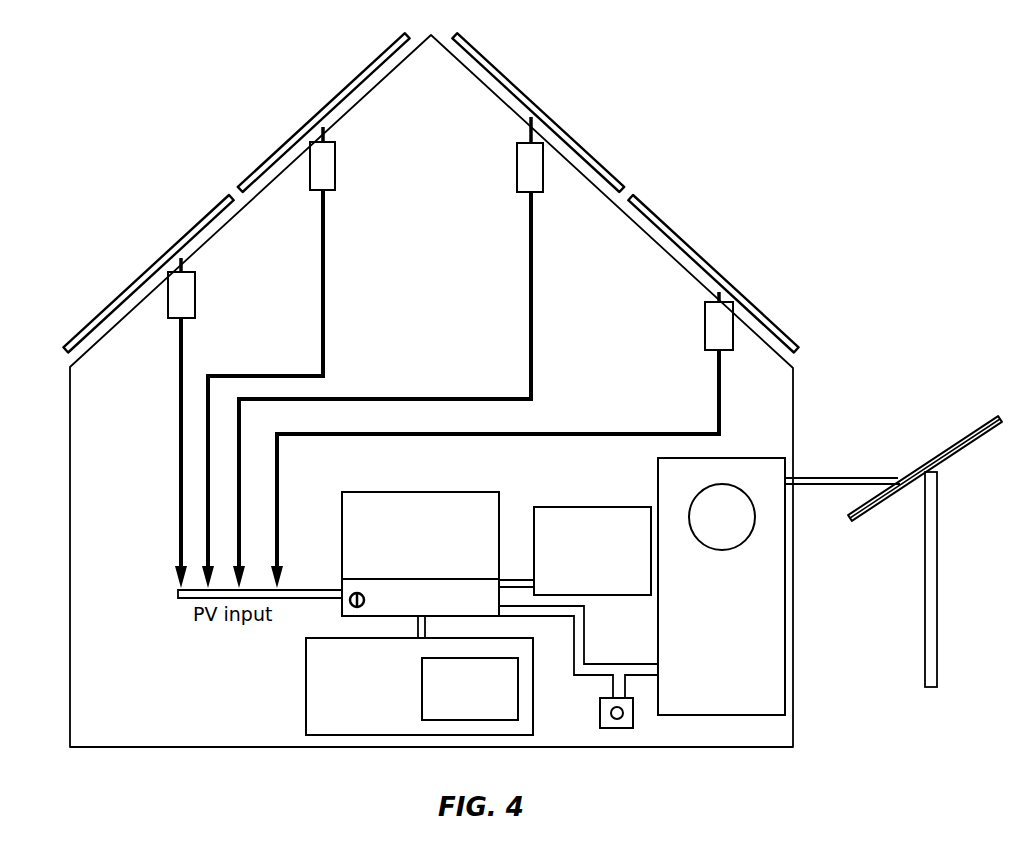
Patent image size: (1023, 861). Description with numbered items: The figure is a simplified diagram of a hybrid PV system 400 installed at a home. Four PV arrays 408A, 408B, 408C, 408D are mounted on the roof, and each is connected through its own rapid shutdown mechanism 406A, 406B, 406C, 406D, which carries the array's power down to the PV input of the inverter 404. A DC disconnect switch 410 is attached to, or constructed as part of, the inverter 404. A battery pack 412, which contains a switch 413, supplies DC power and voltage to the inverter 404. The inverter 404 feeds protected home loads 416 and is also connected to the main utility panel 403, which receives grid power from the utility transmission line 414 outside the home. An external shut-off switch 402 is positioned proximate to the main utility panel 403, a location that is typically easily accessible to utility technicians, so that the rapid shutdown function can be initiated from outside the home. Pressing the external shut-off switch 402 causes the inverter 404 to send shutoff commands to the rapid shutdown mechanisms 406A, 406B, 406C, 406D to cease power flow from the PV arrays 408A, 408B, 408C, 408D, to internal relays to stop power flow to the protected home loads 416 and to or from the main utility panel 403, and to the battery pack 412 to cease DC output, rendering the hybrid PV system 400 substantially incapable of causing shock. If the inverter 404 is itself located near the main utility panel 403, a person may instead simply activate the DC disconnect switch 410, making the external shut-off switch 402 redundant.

The hybrid PV system 400 is at (118, 91).
The external shut-off switch 402 is at (620, 728).
The main utility panel 403 is at (704, 702).
The inverter 404 is at (403, 559).
The rapid shutdown mechanism 406A is at (185, 292).
The rapid shutdown mechanism 406B is at (322, 160).
The rapid shutdown mechanism 406C is at (540, 152).
The rapid shutdown mechanism 406D is at (723, 306).
The PV array 408A is at (130, 300).
The PV array 408B is at (268, 168).
The PV array 408C is at (585, 162).
The PV array 408D is at (770, 320).
The DC disconnect switch 410 is at (380, 579).
The battery pack 412 is at (337, 731).
The switch 413 is at (450, 716).
The utility transmission line 414 is at (937, 617).
The protected home loads 416 is at (553, 507).